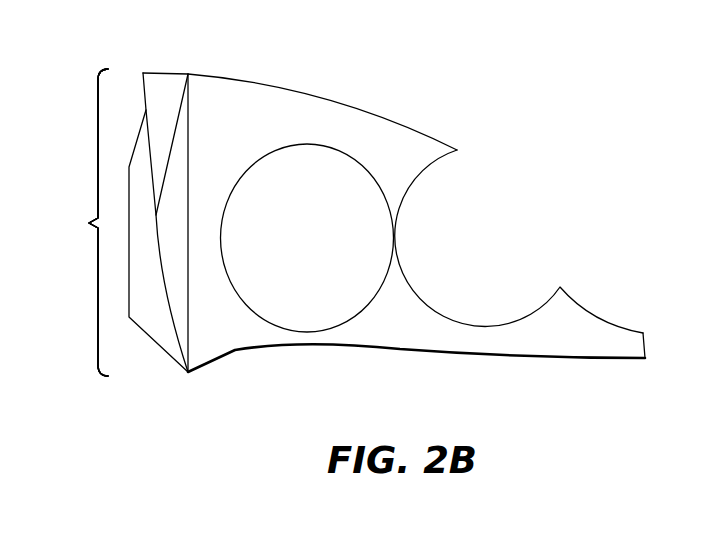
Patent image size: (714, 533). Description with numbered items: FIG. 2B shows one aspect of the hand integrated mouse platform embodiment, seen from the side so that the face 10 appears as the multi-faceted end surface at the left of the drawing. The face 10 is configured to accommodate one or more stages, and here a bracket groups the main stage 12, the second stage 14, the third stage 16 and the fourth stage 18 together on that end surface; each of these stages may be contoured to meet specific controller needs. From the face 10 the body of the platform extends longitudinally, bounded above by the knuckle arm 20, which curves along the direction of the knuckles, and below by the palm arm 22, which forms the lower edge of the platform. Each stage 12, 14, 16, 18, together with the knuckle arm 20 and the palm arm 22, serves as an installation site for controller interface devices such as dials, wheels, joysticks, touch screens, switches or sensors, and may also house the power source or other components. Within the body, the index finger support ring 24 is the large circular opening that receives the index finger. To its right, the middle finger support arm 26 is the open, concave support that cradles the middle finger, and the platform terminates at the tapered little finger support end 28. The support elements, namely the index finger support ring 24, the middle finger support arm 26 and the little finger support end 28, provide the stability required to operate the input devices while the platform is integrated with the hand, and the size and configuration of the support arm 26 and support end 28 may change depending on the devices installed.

The face 10 is at (79, 222).
The main stage 12 is at (79, 222).
The second stage 14 is at (79, 222).
The third stage 16 is at (79, 222).
The fourth stage 18 is at (79, 222).
The knuckle arm 20 is at (213, 107).
The palm arm 22 is at (397, 323).
The index finger support ring 24 is at (307, 197).
The middle finger support arm 26 is at (485, 237).
The little finger support end 28 is at (645, 352).